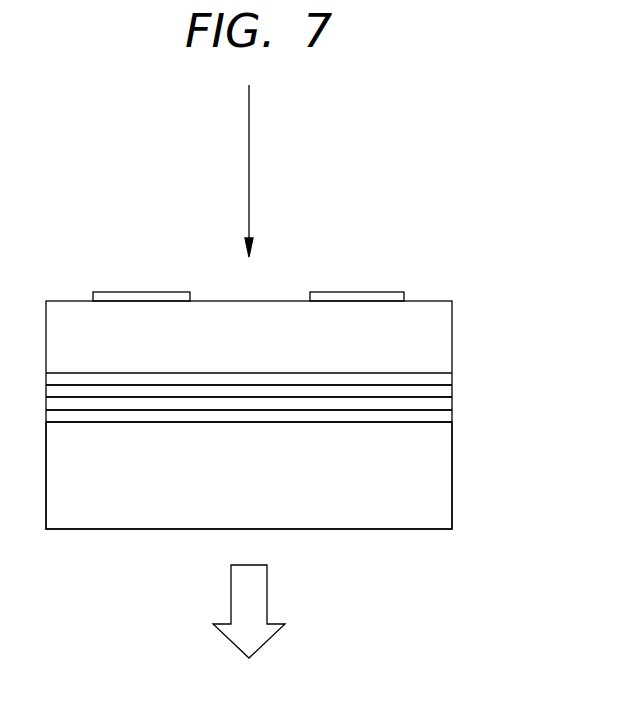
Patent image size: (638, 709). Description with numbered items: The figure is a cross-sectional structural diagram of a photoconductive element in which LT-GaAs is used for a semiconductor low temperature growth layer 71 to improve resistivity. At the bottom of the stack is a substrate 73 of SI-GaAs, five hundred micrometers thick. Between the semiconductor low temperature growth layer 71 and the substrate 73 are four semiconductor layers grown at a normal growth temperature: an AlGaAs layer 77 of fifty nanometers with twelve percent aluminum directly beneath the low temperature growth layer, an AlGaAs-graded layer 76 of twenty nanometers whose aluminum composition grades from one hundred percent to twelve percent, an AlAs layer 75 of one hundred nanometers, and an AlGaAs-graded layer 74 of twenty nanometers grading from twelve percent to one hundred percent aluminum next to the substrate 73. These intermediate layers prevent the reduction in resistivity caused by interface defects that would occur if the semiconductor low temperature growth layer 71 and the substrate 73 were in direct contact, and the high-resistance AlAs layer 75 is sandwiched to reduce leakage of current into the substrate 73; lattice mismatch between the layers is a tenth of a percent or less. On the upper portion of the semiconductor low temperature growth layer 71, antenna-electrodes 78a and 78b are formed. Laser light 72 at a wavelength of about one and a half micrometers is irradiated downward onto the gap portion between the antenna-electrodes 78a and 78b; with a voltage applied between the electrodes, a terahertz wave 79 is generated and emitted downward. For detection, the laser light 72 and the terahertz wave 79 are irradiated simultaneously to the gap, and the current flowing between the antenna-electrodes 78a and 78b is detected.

The semiconductor low temperature growth layer 71 is at (442, 330).
The laser light 72 is at (250, 154).
The substrate 73 is at (442, 497).
The AlGaAs-graded layer 74 is at (442, 414).
The AlAs layer 75 is at (442, 403).
The AlGaAs-graded layer 76 is at (442, 392).
The AlGaAs layer 77 is at (442, 380).
The antenna-electrode 78a is at (358, 292).
The antenna-electrode 78b is at (142, 292).
The terahertz wave 79 is at (267, 597).